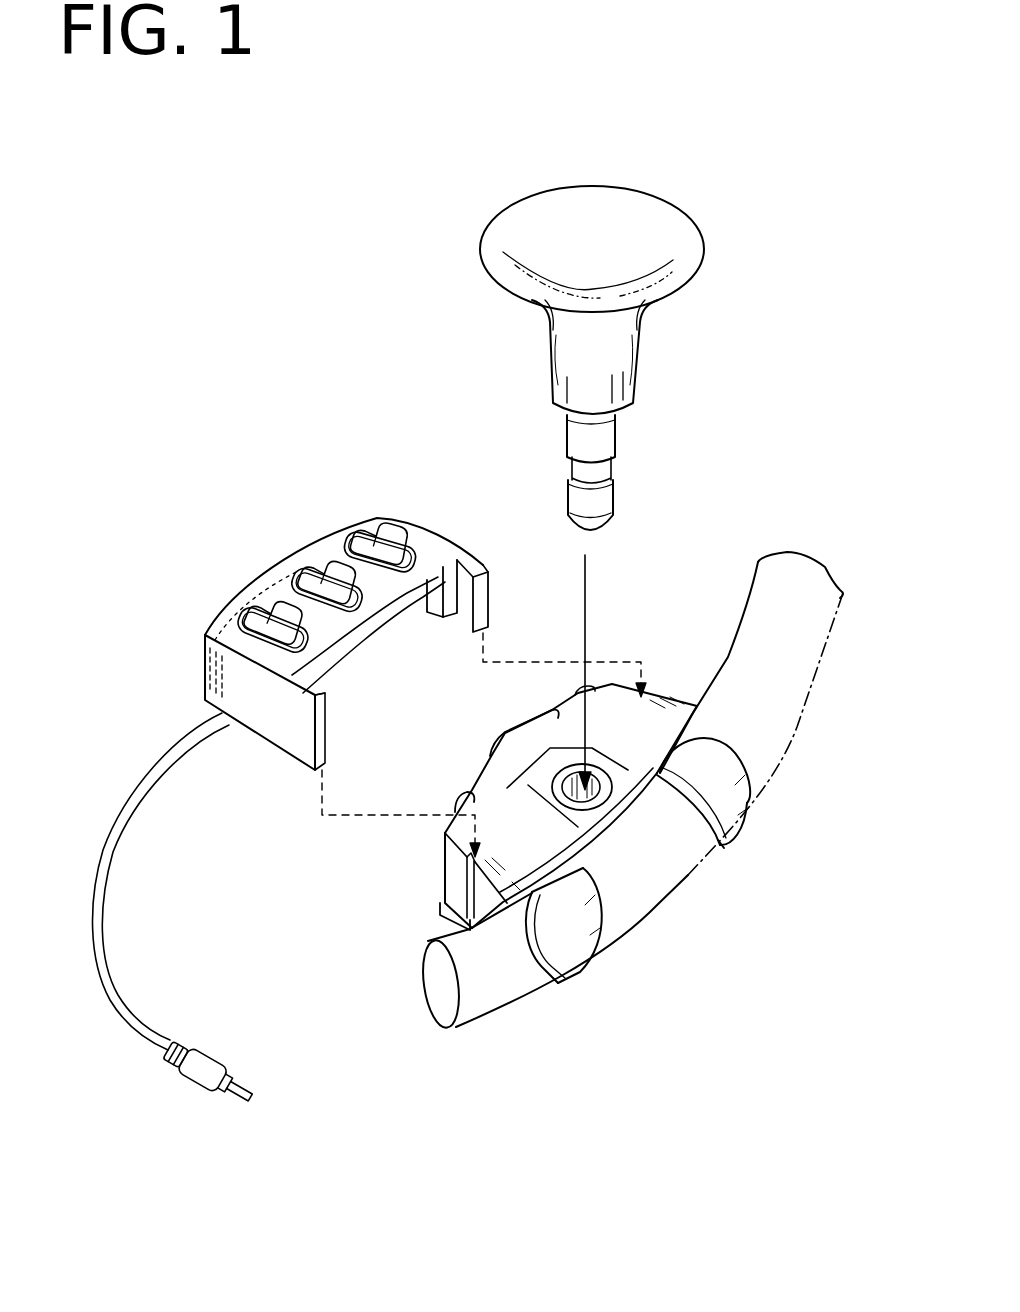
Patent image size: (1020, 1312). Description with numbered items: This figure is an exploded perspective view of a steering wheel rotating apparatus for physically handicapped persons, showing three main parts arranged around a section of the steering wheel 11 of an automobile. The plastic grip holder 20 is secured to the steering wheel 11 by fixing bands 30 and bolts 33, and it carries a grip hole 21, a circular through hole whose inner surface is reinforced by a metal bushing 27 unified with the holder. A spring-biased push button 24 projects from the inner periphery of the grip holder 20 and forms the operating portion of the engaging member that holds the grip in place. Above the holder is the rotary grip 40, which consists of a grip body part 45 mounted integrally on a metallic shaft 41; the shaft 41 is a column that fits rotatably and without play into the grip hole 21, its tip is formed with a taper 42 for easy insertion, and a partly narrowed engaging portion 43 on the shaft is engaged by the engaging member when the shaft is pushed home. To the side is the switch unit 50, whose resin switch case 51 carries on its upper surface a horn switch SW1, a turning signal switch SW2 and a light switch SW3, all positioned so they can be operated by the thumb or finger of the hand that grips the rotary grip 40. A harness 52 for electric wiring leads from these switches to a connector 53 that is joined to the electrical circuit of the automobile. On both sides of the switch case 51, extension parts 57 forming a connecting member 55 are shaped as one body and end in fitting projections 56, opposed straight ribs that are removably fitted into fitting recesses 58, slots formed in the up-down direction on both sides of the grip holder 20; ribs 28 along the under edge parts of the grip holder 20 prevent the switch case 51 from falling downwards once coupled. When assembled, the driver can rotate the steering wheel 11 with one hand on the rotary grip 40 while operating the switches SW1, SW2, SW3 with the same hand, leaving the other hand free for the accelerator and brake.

The steering wheel 11 is at (462, 1030).
The grip holder 20 is at (536, 765).
The grip hole 21 is at (592, 790).
The push button 24 is at (503, 728).
The metal bushing 27 is at (718, 842).
The ribs 28 is at (445, 917).
The fixing bands 30 is at (743, 813).
The bolts 33 is at (470, 800).
The rotary grip 40 is at (580, 308).
The shaft 41 is at (603, 430).
The taper 42 is at (567, 522).
The narrowed engaging portion 43 is at (608, 470).
The grip body part 45 is at (502, 227).
The switch unit 50 is at (316, 607).
The switch case 51 is at (257, 587).
The harness 52 is at (120, 975).
The connector 53 is at (212, 1088).
The connecting member 55 is at (290, 737).
The fitting projections 56 is at (330, 707).
The extension parts 57 is at (281, 722).
The fitting recesses 58 is at (643, 675).
The horn switch SW1 is at (390, 522).
The turning signal switch SW2 is at (303, 573).
The light switch SW3 is at (253, 608).